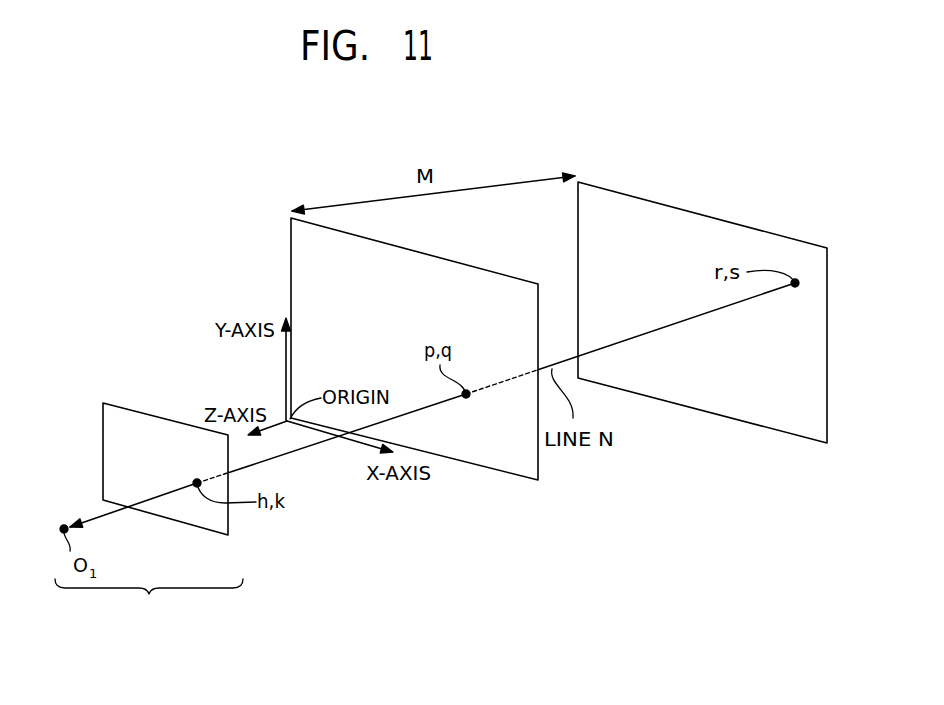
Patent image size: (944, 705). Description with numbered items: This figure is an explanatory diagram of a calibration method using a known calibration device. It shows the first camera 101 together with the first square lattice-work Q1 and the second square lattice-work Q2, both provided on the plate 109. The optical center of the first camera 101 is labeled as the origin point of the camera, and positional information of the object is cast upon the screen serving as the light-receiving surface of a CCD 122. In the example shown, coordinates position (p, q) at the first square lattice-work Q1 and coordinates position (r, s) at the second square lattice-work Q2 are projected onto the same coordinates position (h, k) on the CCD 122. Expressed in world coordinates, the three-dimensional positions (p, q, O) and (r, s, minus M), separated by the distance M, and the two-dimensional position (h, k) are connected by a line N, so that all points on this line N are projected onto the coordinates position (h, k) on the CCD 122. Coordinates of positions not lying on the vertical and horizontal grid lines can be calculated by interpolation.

The plate 109 is at (485, 467).
The CCD 122 is at (172, 519).
The first camera 101 is at (149, 602).